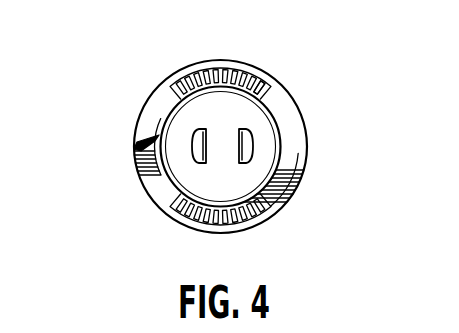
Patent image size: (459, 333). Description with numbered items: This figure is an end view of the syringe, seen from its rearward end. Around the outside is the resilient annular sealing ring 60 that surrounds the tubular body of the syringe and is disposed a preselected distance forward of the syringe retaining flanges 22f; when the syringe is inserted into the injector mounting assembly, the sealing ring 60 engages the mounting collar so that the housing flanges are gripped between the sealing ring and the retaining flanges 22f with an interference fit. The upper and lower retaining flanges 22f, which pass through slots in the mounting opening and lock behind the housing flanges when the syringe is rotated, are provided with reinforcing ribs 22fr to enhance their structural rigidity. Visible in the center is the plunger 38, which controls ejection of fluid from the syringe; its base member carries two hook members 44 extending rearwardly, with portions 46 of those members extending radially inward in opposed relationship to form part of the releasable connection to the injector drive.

The retaining flange 22f is at (215, 72).
The reinforcing rib 22fr is at (250, 73).
The hook member 44 is at (199, 146).
The radially inward portion 46 is at (253, 145).
The plunger 38 is at (136, 146).
The sealing ring 60 is at (295, 150).